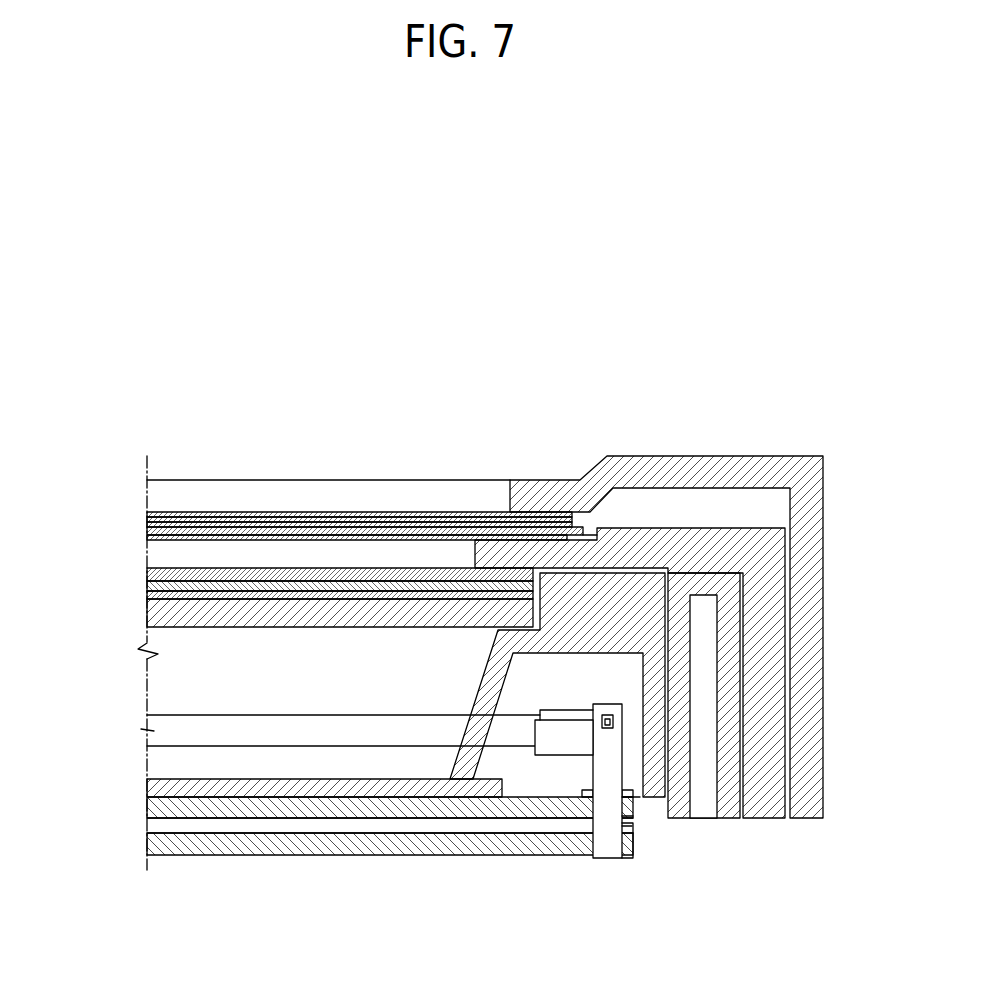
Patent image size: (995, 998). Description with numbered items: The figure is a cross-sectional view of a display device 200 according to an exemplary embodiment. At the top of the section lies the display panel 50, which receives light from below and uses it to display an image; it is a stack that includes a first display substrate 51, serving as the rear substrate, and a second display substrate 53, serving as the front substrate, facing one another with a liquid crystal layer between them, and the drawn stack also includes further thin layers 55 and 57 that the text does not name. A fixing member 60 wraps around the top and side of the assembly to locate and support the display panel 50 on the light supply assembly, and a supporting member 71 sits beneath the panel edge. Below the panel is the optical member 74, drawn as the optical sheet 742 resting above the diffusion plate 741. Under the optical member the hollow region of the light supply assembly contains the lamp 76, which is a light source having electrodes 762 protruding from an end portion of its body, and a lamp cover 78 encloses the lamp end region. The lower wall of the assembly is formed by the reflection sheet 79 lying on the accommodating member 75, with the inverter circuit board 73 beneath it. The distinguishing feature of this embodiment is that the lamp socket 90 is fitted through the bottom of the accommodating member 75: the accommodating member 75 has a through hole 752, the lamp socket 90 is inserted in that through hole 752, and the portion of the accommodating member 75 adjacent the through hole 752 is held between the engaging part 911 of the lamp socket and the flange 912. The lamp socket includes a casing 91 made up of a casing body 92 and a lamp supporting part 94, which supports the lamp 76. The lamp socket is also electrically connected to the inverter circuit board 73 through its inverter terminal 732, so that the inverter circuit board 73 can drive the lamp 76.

The display device 200 is at (488, 315).
The display panel 50 is at (372, 443).
The front polarizer 55 is at (225, 512).
The first display substrate 51 is at (273, 520).
The second display substrate 53 is at (320, 530).
The optical sheet 57 is at (362, 537).
The fixing member 60 is at (739, 456).
The supporting member 71 is at (680, 535).
The lamp cover 78 is at (612, 583).
The optical member 74 is at (275, 609).
The optical sheet 742 is at (147, 594).
The diffusion plate 741 is at (153, 620).
The lamp 76 is at (155, 730).
The electrode 762 is at (625, 730).
The reflection sheet 79 is at (273, 788).
The accommodating member 75 is at (338, 810).
The inverter circuit board 73 is at (210, 848).
The lamp socket 90 is at (597, 858).
The casing 91 is at (548, 836).
The casing body 92 is at (602, 787).
The lamp supporting part 94 is at (550, 742).
The engaging part 911 is at (633, 828).
The flange 912 is at (623, 798).
The inverter terminal 732 is at (622, 855).
The through hole 752 is at (622, 818).